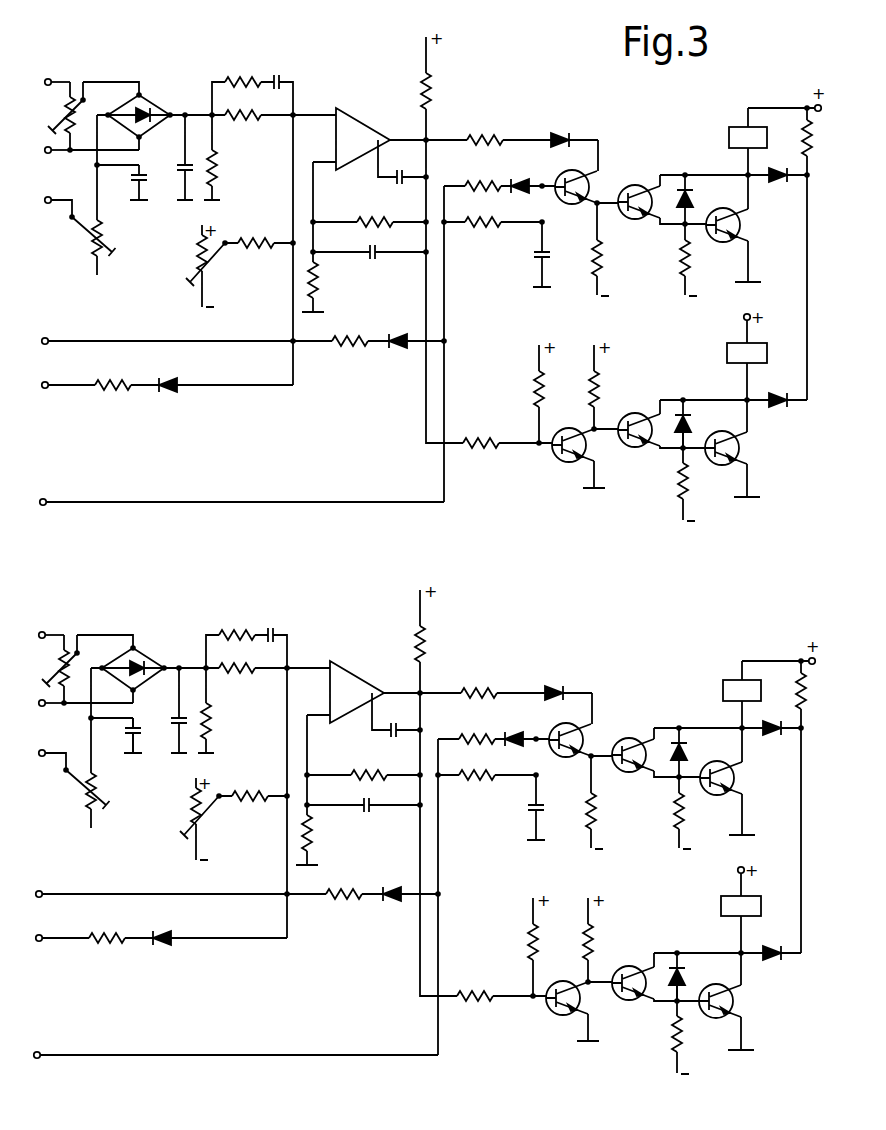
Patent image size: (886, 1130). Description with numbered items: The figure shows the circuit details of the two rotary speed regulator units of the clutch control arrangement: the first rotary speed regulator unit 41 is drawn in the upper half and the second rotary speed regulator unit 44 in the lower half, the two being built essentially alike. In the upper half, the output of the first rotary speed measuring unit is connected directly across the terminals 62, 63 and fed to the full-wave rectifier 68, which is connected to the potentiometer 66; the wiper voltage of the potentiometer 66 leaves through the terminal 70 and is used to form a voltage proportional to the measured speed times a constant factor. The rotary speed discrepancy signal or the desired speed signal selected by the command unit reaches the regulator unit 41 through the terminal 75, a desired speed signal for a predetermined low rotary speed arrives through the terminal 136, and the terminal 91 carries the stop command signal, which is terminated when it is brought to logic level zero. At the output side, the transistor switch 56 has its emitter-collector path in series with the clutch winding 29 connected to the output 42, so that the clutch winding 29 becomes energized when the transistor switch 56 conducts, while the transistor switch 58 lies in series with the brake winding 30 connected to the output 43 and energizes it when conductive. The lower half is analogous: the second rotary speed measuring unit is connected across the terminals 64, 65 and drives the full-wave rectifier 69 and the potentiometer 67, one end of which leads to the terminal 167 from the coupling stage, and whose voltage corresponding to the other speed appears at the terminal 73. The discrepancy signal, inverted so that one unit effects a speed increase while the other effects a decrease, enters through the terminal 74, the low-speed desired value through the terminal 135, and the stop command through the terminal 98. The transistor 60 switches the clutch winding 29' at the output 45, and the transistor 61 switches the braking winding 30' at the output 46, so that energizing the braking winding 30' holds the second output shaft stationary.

The terminal 62 is at (57, 64).
The terminal 63 is at (57, 168).
The terminal 70 is at (59, 219).
The potentiometer 66 is at (105, 228).
The full-wave rectifier 68 is at (149, 102).
The first rotary speed regulator unit 41 is at (515, 118).
The brake winding 30 is at (725, 120).
The output 43 is at (745, 175).
The transistor switch 58 is at (741, 225).
The clutch winding 29 is at (726, 346).
The output 42 is at (745, 400).
The transistor switch 56 is at (739, 448).
The terminal 75 is at (167, 322).
The terminal 136 is at (167, 403).
The terminal 91 is at (242, 484).
The terminal 64 is at (51, 615).
The terminal 65 is at (51, 724).
The terminal 73 is at (53, 773).
The potentiometer 67 is at (99, 787).
The full-wave rectifier 69 is at (134, 653).
The terminal 167 is at (115, 739).
The second rotary speed regulator unit 44 is at (526, 652).
The braking winding 30' is at (716, 678).
The output 46 is at (727, 713).
The transistor 61 is at (735, 777).
The clutch winding 29' is at (719, 900).
The output 45 is at (727, 940).
The transistor 60 is at (733, 1002).
The terminal 74 is at (161, 876).
The terminal 135 is at (161, 956).
The terminal 98 is at (236, 1036).